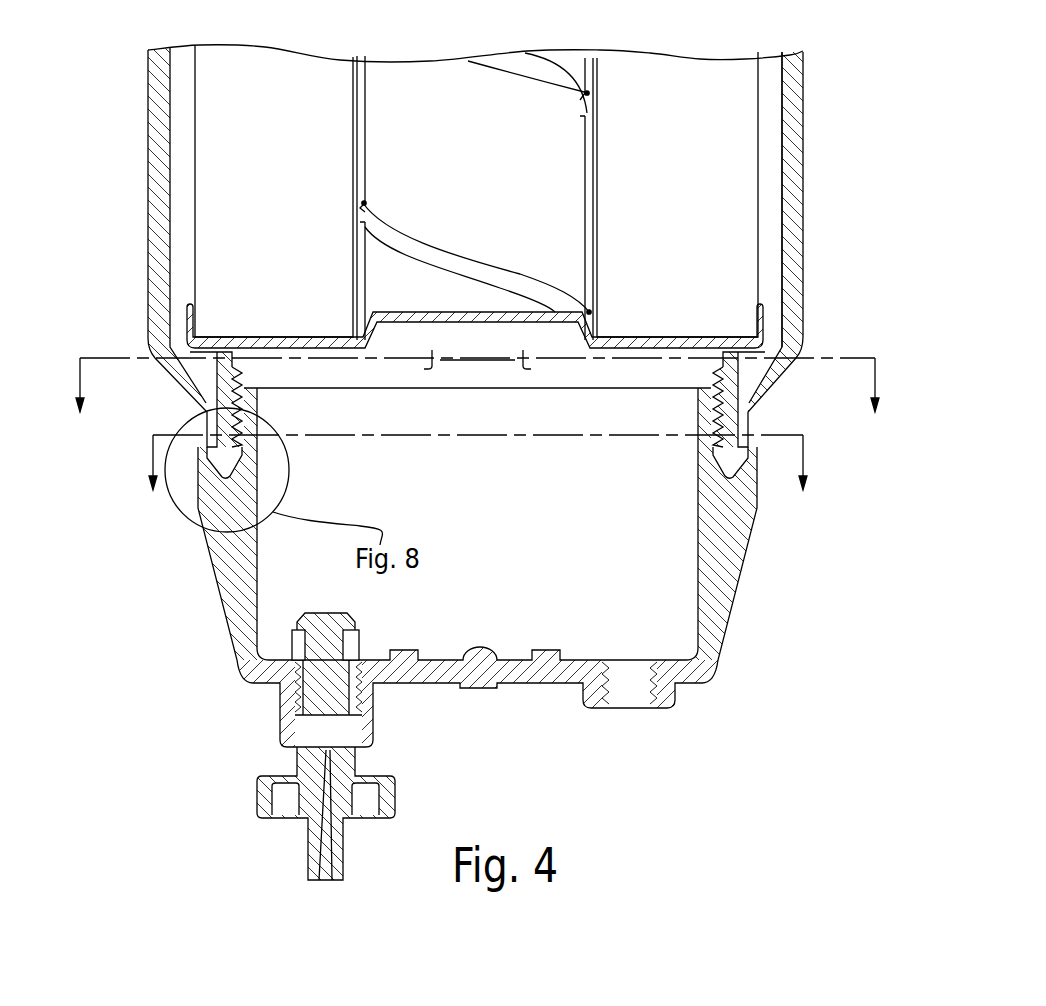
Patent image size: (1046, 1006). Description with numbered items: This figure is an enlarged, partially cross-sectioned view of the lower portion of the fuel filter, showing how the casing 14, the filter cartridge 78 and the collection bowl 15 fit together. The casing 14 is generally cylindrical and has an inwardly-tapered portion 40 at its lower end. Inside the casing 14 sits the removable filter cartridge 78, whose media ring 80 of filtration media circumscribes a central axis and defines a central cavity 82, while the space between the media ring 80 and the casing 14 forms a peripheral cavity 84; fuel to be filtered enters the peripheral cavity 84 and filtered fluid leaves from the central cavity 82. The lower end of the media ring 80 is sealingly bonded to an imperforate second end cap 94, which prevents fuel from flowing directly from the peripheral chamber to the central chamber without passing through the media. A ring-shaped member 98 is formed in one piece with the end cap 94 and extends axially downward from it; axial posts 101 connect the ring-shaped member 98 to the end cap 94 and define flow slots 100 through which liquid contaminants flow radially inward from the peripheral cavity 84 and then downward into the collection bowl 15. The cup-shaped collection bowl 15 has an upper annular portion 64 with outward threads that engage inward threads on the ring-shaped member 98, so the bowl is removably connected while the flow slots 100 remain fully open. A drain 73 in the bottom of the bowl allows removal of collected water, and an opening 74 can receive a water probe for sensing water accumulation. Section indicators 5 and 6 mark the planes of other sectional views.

The casing 14 is at (153, 196).
The collection bowl 15 is at (728, 572).
The inwardly-tapered portion 40 is at (185, 383).
The upper annular portion 64 is at (245, 398).
The drain 73 is at (342, 762).
The opening 74 is at (625, 700).
The filter cartridge 78 is at (757, 133).
The media ring 80 is at (722, 185).
The central cavity 82 is at (486, 185).
The peripheral cavity 84 is at (770, 280).
The second end cap 94 is at (188, 324).
The ring-shaped member 98 is at (730, 381).
The flow slots 100 is at (388, 367).
The axial posts 101 is at (507, 360).
The section line 5- 5 is at (476, 387).
The section line 6- 6 is at (480, 465).